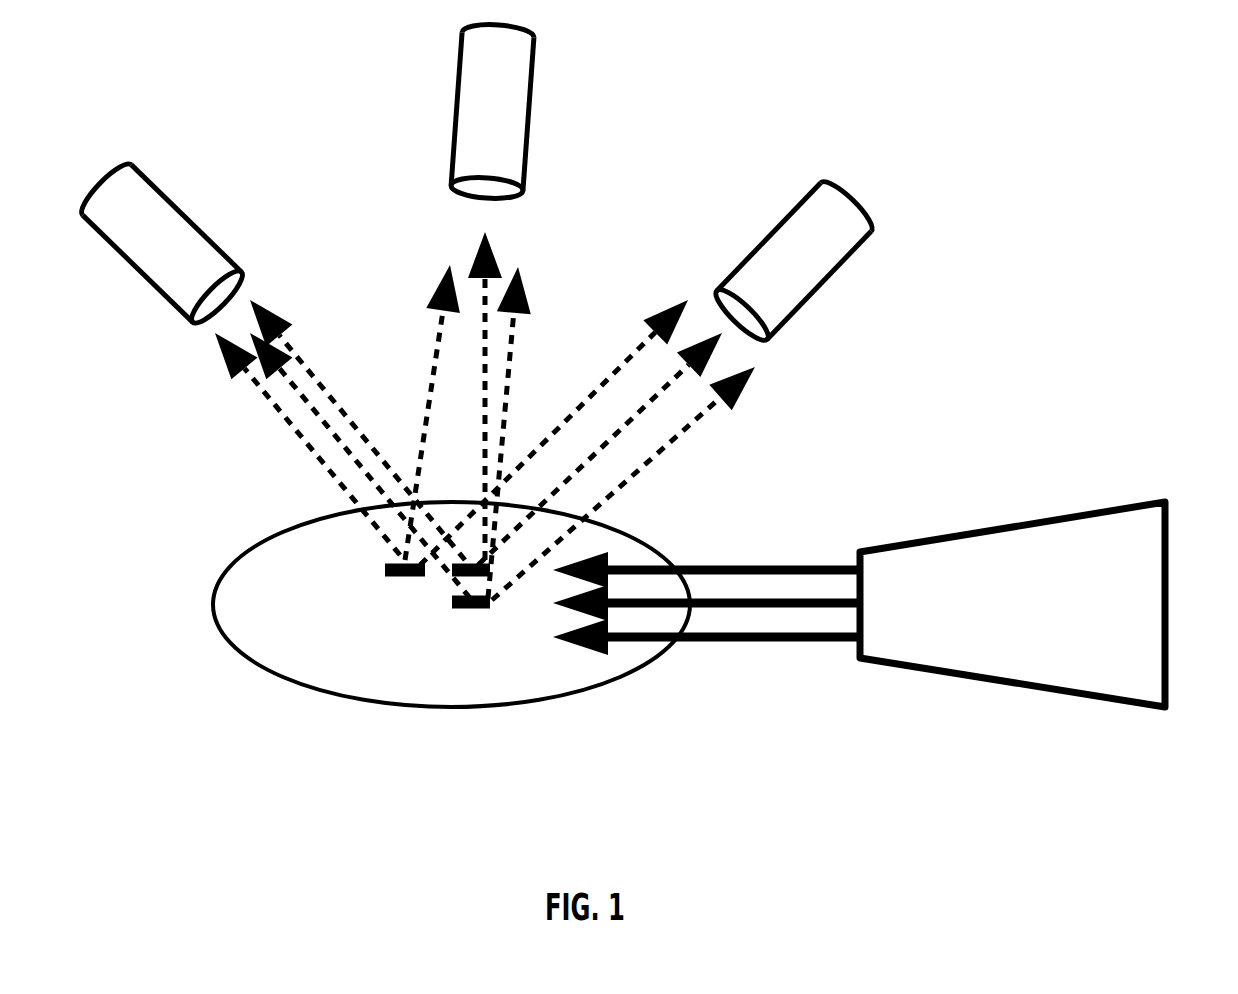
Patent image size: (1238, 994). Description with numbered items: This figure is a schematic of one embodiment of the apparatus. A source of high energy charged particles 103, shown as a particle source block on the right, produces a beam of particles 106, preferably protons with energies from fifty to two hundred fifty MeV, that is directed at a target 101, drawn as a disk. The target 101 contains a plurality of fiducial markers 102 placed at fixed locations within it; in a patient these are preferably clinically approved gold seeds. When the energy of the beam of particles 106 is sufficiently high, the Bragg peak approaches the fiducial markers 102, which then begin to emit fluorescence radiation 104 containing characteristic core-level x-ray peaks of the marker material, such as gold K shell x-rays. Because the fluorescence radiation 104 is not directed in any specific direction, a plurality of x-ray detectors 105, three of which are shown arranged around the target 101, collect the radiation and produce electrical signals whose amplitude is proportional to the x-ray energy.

The target 101 is at (212, 603).
The fiducial markers 102 is at (452, 603).
The source of high energy charged particles 103 is at (1013, 687).
The fluorescence radiation 104 is at (650, 478).
The x-ray detectors 105 is at (530, 117).
The beam of particles 106 is at (775, 652).